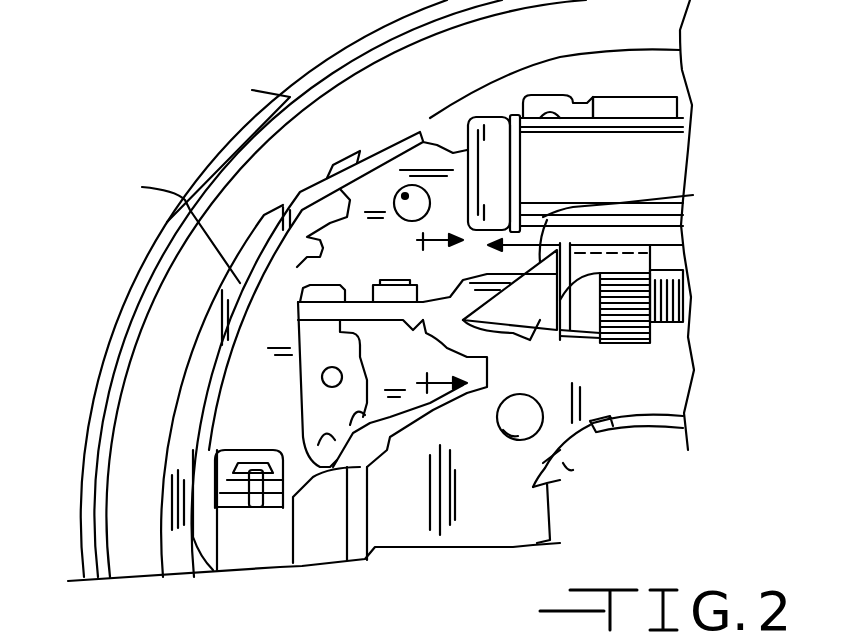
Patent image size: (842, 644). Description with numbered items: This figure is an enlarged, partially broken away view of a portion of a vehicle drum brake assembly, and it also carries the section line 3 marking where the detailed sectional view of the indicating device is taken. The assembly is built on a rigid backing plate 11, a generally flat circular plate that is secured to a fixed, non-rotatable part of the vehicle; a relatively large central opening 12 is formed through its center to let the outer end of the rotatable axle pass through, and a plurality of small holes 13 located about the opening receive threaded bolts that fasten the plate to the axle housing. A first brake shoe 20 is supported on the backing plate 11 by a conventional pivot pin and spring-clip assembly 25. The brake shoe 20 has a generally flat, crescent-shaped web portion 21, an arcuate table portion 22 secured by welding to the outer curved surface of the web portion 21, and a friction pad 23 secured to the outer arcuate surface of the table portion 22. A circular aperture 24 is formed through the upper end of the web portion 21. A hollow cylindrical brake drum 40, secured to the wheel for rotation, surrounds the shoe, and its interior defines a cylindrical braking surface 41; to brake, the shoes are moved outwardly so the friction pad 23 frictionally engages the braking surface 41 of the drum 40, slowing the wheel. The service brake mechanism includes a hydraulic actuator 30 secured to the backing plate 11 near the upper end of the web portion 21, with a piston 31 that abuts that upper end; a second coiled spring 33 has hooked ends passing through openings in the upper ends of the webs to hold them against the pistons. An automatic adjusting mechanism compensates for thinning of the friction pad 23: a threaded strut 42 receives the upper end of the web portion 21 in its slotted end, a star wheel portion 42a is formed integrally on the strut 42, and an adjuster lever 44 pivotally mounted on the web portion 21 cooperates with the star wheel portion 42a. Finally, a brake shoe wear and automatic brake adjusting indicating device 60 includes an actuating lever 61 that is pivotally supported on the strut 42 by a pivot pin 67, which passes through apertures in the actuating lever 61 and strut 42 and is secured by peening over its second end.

The section line 3- 3 is at (488, 337).
The backing plate 11 is at (420, 517).
The central opening 12 is at (562, 450).
The small holes 13 is at (500, 432).
The first brake shoe 20 is at (203, 366).
The web portion 21 is at (268, 406).
The table portion 22 is at (228, 146).
The friction pad 23 is at (220, 225).
The circular aperture 24 is at (405, 196).
The pivot pin and spring-clip assembly 25 is at (226, 432).
The hydraulic actuator 30 is at (630, 187).
The piston 31 is at (487, 117).
The second coiled spring 33 is at (693, 195).
The brake drum 40 is at (97, 531).
The cylindrical braking surface 41 is at (118, 448).
The strut 42 is at (560, 345).
The star wheel portion 42a is at (623, 357).
The adjuster lever 44 is at (651, 332).
The indicating device 60 is at (460, 337).
The actuating lever 61 is at (413, 323).
The pivot pin 67 is at (395, 280).